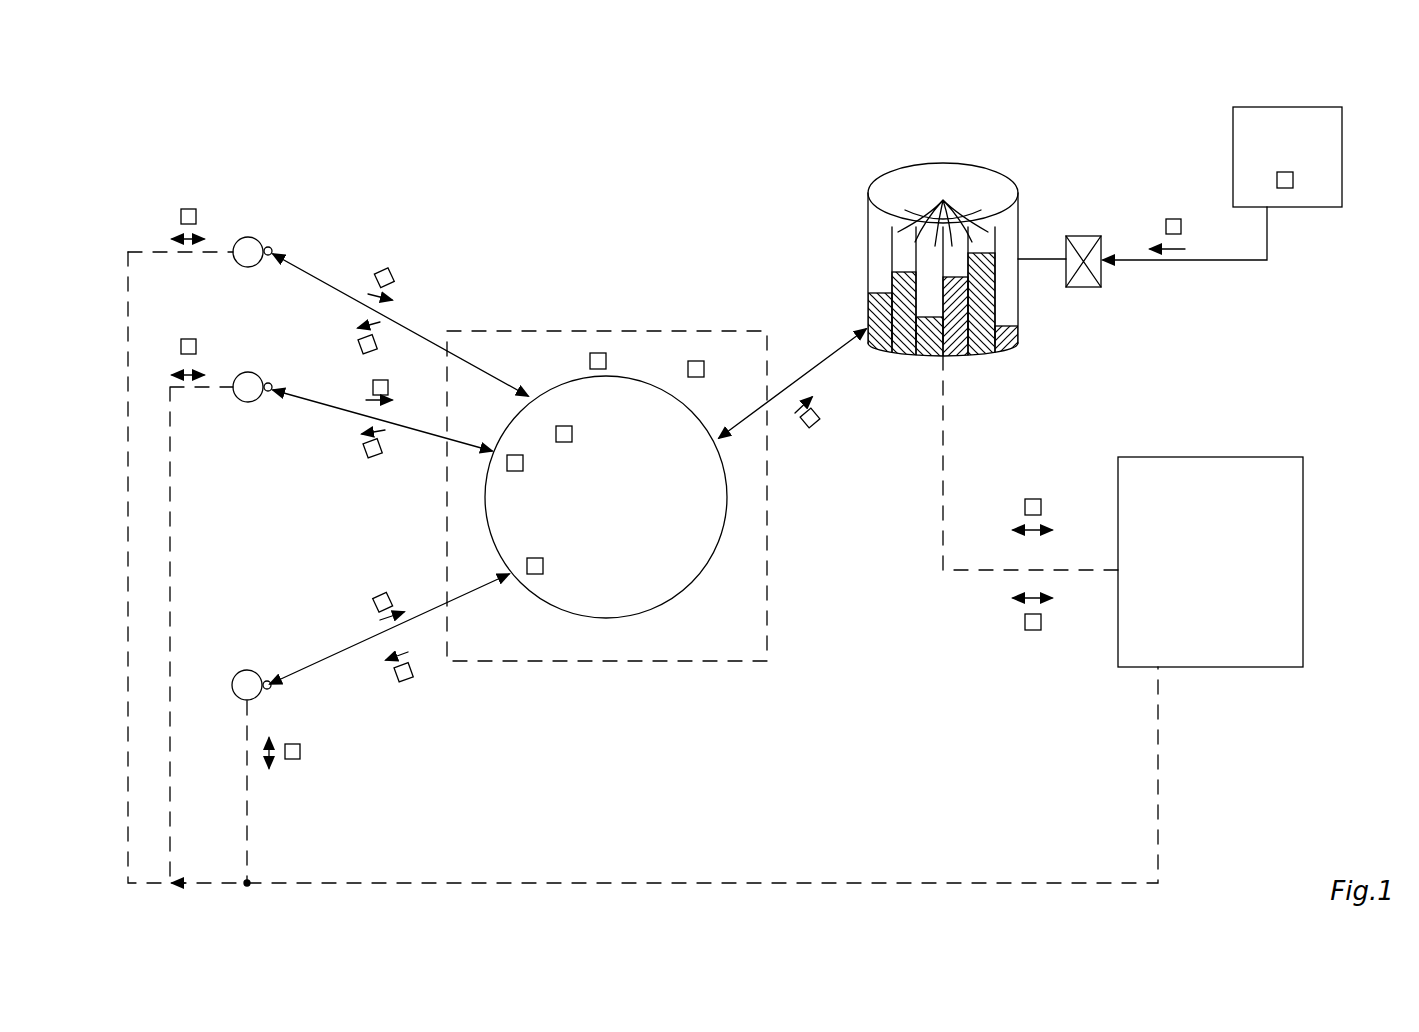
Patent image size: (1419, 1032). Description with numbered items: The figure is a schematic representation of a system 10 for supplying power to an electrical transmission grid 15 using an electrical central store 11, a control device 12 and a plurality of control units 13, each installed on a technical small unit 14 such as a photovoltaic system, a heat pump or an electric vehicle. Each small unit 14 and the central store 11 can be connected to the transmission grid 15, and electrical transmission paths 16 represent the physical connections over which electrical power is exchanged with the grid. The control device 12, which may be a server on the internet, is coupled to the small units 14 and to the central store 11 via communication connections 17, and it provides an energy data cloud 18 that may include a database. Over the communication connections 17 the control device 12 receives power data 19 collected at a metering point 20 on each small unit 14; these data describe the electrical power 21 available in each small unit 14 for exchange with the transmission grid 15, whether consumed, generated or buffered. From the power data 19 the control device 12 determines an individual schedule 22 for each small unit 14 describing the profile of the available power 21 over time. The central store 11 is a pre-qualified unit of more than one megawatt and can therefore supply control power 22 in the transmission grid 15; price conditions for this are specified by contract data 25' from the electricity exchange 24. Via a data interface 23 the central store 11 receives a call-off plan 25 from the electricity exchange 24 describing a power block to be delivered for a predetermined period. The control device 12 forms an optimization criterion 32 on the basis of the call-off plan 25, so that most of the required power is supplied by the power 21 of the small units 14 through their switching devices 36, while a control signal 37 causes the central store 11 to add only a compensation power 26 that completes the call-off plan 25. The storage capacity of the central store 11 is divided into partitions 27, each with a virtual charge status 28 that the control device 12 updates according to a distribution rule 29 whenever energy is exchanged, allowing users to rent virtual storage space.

The system 10 is at (476, 114).
The electrical central store 11 is at (943, 163).
The control device 12 is at (608, 330).
The control unit 13 is at (271, 256).
The technical small unit 14 is at (238, 242).
The transmission grid 15 is at (1303, 546).
The electrical transmission path 16 is at (943, 445).
The communication connection 17 is at (420, 340).
The energy data cloud 18 is at (668, 602).
The power data 19 is at (379, 272).
The metering point 20 is at (268, 246).
The electrical power 21 is at (187, 208).
The schedule 22 is at (574, 434).
The data interface 23 is at (1088, 236).
The electricity exchange 24 is at (1342, 150).
The call-off plan 25 is at (1162, 202).
The contract data 25' is at (1300, 210).
The compensation power 26 is at (1024, 622).
The partition 27 is at (943, 210).
The virtual charge status 28 is at (885, 350).
The distribution rule 29 is at (696, 360).
The optimization criterion 32 is at (590, 358).
The switching device 36 is at (358, 345).
The control signal 37 is at (810, 428).